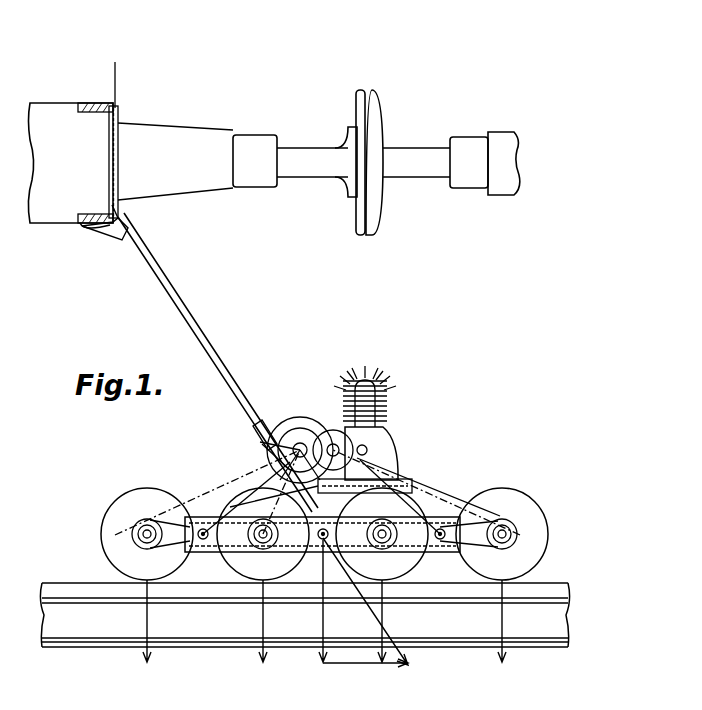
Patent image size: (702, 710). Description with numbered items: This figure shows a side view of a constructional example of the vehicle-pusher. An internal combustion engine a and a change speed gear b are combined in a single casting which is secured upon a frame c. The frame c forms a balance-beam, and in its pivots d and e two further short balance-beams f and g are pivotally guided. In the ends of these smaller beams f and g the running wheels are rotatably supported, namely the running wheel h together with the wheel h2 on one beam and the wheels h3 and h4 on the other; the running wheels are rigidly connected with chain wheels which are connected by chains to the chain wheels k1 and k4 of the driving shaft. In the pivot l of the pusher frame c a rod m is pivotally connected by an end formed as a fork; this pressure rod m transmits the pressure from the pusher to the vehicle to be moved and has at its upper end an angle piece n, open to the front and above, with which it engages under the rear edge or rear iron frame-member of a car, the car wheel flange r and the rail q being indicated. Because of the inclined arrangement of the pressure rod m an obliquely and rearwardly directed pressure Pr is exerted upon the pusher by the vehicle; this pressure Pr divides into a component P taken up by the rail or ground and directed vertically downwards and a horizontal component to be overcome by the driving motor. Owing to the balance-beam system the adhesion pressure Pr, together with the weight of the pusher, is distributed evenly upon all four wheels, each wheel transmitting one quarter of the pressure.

The wheel flange r is at (80, 226).
The angle piece n is at (114, 236).
The pressure rod m is at (197, 344).
The chain wheel of the driving shaft k1 is at (285, 425).
The chain wheel of the driving shaft k4 is at (282, 376).
The change speed gear b is at (317, 420).
The internal combustion engine a is at (384, 448).
The short balance-beam f is at (172, 527).
The pivot d is at (205, 528).
The running wheel h is at (110, 533).
The pivot l is at (418, 516).
The pivot e is at (443, 528).
The short balance-beam g is at (478, 530).
The running wheel h4 is at (551, 547).
The running wheel h2 is at (240, 573).
The running wheel h3 is at (408, 572).
The frame c is at (305, 548).
The rail q is at (569, 618).
The vertical pressure component P is at (363, 603).
The obliquely directed pressure Pr is at (365, 601).